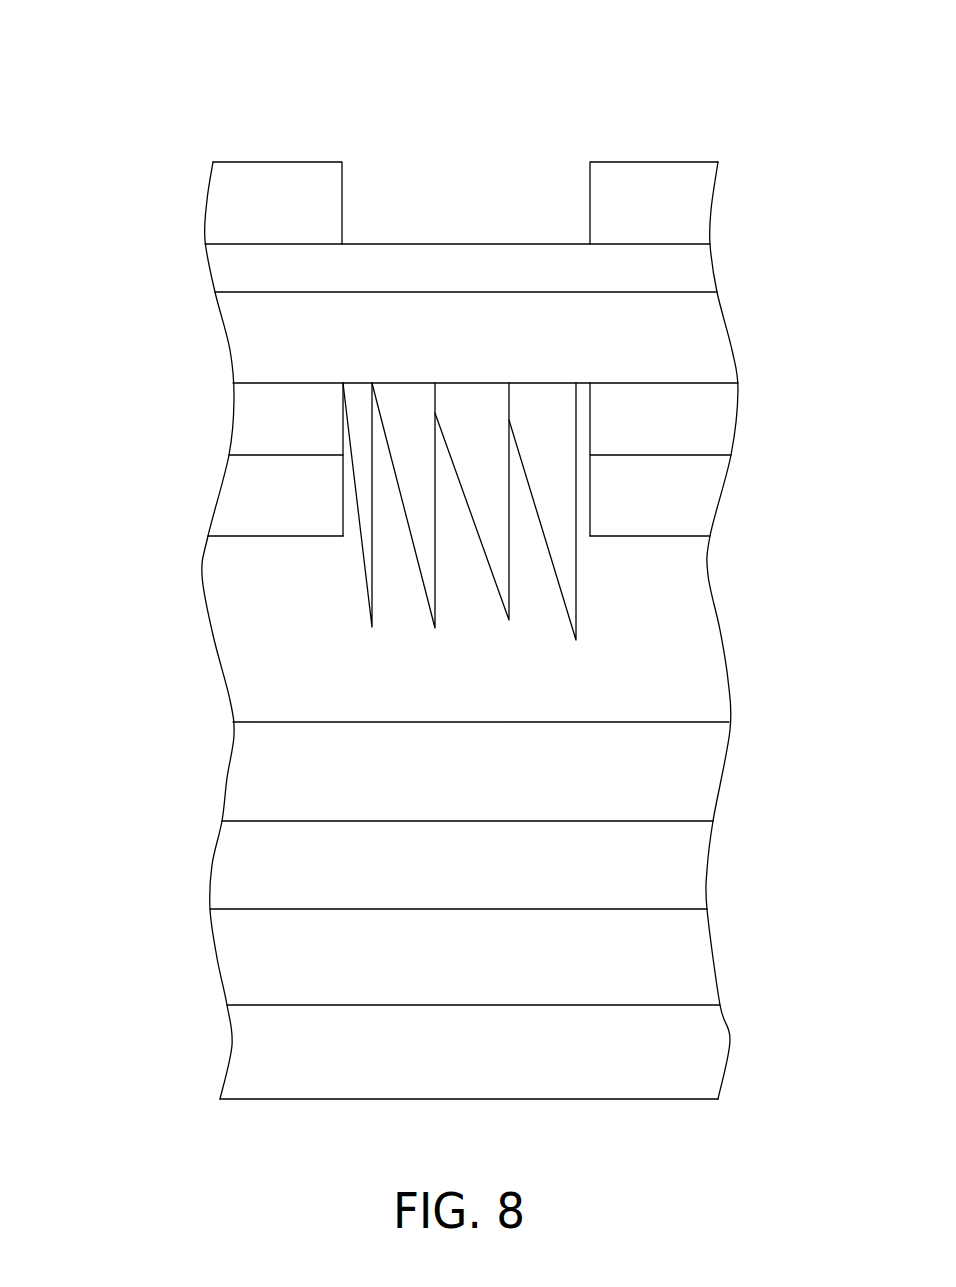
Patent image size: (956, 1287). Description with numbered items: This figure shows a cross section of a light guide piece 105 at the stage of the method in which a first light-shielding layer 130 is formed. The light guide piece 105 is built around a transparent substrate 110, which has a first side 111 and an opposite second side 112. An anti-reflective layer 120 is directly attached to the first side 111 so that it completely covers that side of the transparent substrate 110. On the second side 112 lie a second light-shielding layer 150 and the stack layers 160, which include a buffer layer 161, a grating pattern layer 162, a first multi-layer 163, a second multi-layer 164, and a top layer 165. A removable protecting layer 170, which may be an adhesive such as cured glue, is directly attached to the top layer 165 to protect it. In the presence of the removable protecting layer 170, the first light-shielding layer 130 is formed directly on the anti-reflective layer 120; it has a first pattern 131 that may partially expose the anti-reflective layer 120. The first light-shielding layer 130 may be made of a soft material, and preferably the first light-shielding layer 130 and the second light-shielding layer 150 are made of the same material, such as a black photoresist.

The light guide piece 105 is at (702, 87).
The first light-shielding layer 130 is at (221, 200).
The first pattern 131 is at (429, 183).
The anti-reflective layer 120 is at (707, 263).
The transparent substrate 110 is at (429, 336).
The first side 111 is at (253, 292).
The second side 112 is at (263, 383).
The second light-shielding layer 150 is at (246, 431).
The stack layers 160 is at (390, 694).
The buffer layer 161 is at (225, 497).
The grating pattern layer 162 is at (228, 632).
The first multi-layer 163 is at (244, 774).
The second multi-layer 164 is at (222, 862).
The top layer 165 is at (430, 974).
The removable protecting layer 170 is at (710, 1022).